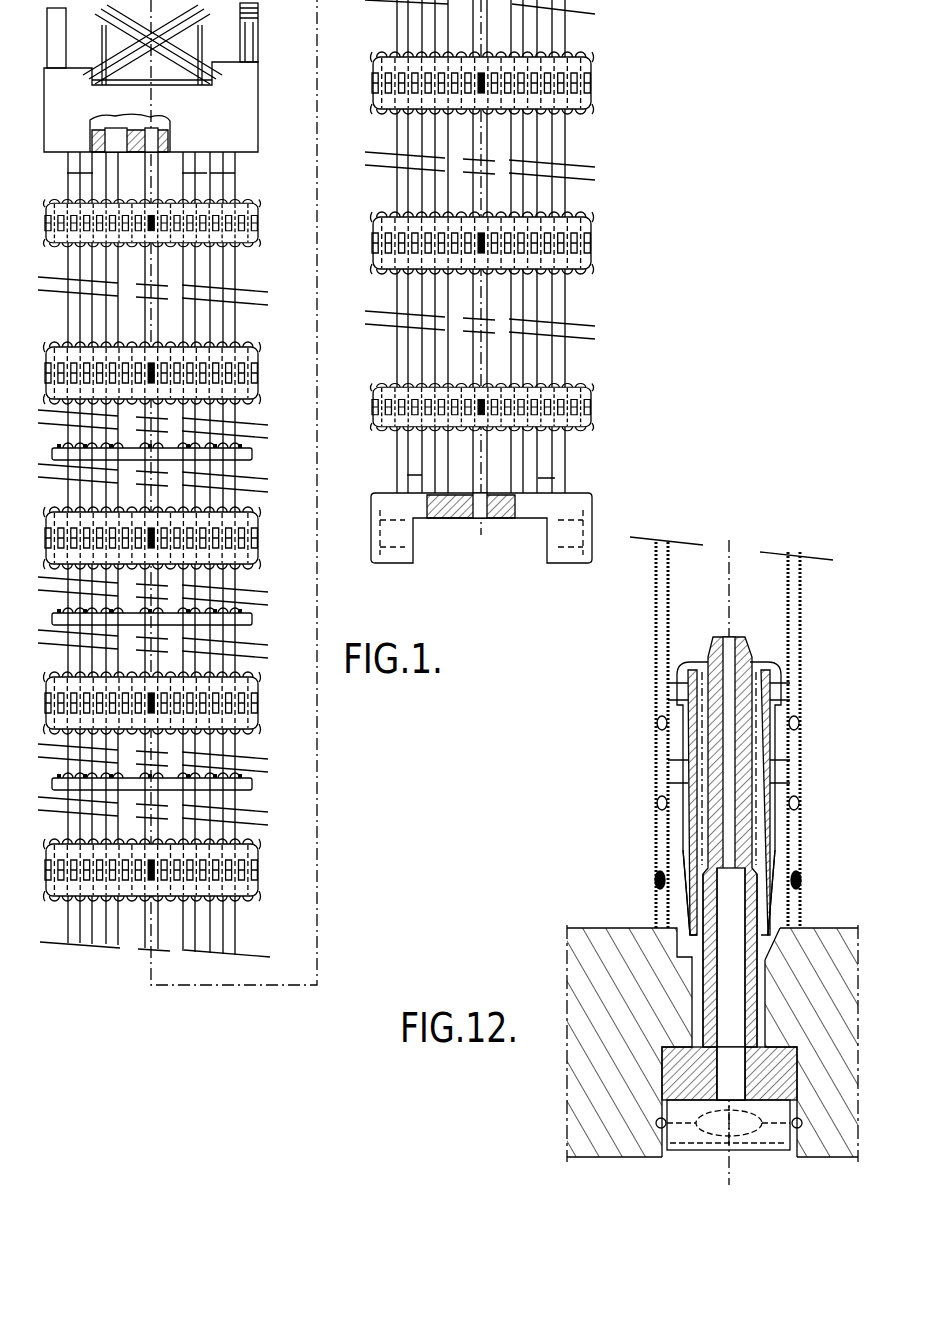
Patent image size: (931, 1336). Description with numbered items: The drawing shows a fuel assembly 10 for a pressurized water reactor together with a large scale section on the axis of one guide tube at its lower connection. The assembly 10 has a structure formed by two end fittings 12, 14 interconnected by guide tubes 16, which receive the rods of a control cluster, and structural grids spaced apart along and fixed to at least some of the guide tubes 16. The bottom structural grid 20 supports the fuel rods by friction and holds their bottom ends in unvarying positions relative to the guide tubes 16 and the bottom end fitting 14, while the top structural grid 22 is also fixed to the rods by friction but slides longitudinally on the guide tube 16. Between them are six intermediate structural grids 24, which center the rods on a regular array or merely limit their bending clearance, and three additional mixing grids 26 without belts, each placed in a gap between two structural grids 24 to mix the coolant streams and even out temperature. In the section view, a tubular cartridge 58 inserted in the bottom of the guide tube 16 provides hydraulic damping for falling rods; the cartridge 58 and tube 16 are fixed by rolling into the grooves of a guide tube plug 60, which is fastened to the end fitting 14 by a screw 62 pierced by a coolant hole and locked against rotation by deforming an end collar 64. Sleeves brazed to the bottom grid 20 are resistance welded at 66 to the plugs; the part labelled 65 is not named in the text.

In FIG. 1, the fuel assembly 10 is at (123, 965).
In FIG. 1, the top end fitting 12 is at (238, 134).
In FIG. 1, the bottom end fitting 14 is at (558, 527).
In FIG. 12, the bottom end fitting 14 is at (598, 950).
In FIG. 1, the guide tubes 16 is at (228, 275).
In FIG. 12, the guide tubes 16 is at (660, 804).
In FIG. 1, the bottom structural grid 20 is at (593, 405).
In FIG. 1, the top structural grid 22 is at (258, 222).
In FIG. 1, the intermediate structural grids 24 is at (262, 363).
In FIG. 1, the mixing grids 26 is at (254, 453).
In FIG. 12, the tubular cartridge 58 is at (656, 620).
In FIG. 12, the guide tube plug 60 is at (678, 703).
In FIG. 12, the screw 62 is at (703, 922).
In FIG. 12, the end collar 64 is at (683, 1140).
In FIG. 12, the sleeve 65 is at (663, 848).
In FIG. 12, the resistance weld 66 is at (657, 880).